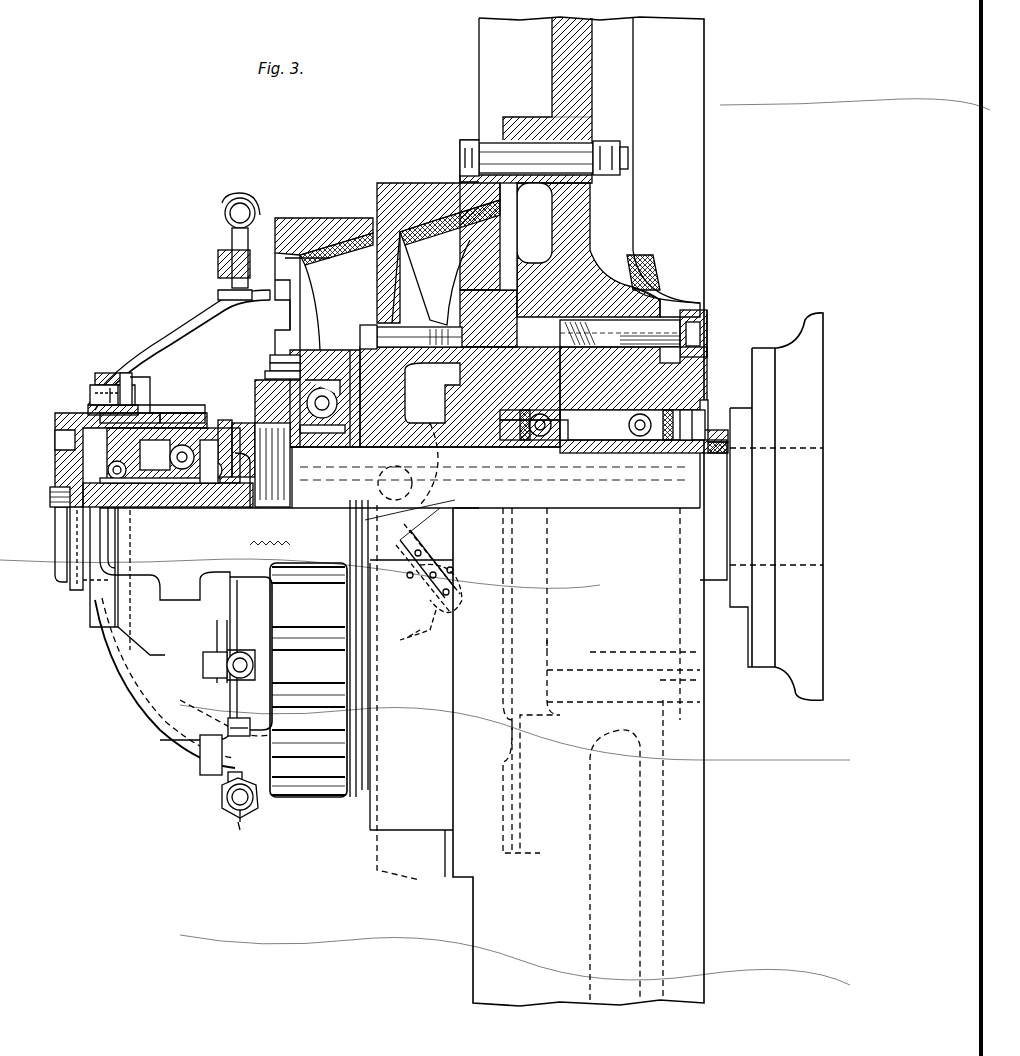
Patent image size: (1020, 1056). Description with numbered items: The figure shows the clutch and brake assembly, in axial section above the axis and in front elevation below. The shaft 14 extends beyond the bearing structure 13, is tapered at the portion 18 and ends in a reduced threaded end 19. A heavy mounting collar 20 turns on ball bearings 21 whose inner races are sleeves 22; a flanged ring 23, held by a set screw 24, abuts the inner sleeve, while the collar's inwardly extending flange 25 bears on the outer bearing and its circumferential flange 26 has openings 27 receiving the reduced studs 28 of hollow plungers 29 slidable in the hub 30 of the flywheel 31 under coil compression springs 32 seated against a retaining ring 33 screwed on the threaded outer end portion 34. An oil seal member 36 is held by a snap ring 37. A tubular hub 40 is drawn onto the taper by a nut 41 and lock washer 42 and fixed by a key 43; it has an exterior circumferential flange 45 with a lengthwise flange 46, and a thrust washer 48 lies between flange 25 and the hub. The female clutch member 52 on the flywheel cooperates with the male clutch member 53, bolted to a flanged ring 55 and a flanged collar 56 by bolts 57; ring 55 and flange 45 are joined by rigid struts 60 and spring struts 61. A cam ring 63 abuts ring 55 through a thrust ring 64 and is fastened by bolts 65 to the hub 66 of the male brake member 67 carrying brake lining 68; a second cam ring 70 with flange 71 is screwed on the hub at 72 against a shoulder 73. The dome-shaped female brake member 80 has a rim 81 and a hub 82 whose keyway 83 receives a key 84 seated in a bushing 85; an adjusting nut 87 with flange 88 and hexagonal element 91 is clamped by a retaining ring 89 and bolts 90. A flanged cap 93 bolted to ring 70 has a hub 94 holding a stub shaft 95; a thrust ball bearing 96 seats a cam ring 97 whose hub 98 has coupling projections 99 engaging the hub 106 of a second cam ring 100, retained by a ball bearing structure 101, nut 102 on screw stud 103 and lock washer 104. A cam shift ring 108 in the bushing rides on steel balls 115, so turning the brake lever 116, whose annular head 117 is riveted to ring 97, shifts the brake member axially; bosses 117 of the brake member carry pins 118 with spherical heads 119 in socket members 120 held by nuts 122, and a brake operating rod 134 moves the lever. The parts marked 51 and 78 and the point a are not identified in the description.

The bearing structure 13 is at (810, 313).
The shaft 14 is at (750, 470).
The tapered portion 18 is at (345, 508).
The reduced threaded end 19 is at (275, 508).
The mounting collar 20 is at (707, 360).
The ball bearings 21 is at (640, 440).
The sleeve 22 is at (665, 440).
The flanged ring 23 is at (728, 432).
The dog-point set screw 24 is at (728, 445).
The inwardly extending flange 25 is at (555, 440).
The circumferential flange 26 is at (707, 345).
The openings 27 is at (700, 330).
The reduced studs 28 is at (705, 315).
The hollow plungers 29 is at (672, 320).
The flywheel hub 30 is at (640, 270).
The flywheel 31 is at (704, 55).
The coil compression spring 32 is at (636, 255).
The retaining ring 33 is at (590, 245).
The threaded outer end portion 34 is at (613, 431).
The oil seal member 36 is at (690, 440).
The snap ring 37 is at (708, 410).
The tubular hub 40 is at (470, 440).
The nut 41 is at (245, 425).
The lock washer 42 is at (225, 420).
The key 43 is at (440, 455).
The exterior circumferential flange 45 is at (460, 327).
The lengthwise flange 46 is at (420, 325).
The thrust washer 48 is at (510, 440).
The friction lining 51 is at (423, 183).
The female clutch member 52 is at (393, 183).
The male clutch member 53 is at (435, 258).
The flanged ring 55 is at (352, 447).
The flanged collar 56 is at (520, 300).
The bolts 57 is at (410, 300).
The rigid struts 60 is at (417, 535).
The spring struts 61 is at (430, 590).
The cam ring 63 is at (340, 350).
The thrust ring 64 is at (330, 447).
The bolts 65 is at (275, 366).
The hub 66 is at (305, 350).
The male brake member 67 is at (292, 305).
The brake lining 68 is at (318, 218).
The second cam ring 70 is at (275, 395).
The inwardly extending flange 71 is at (270, 375).
The threaded connection 72 is at (298, 477).
The shoulder 73 is at (325, 485).
The ring 78 is at (275, 358).
The female brake member 80 is at (208, 290).
The rim 81 is at (292, 218).
The hub 82 is at (180, 413).
The keyway 83 is at (125, 373).
The key 84 is at (165, 413).
The bushing 85 is at (95, 405).
The adjusting nut 87 is at (75, 533).
The flange 88 is at (97, 375).
The flanged retaining ring 89 is at (98, 373).
The bolts 90 is at (120, 385).
The hexagonal element 91 is at (62, 565).
The flanged cap 93 is at (235, 582).
The hub 94 is at (222, 483).
The stub shaft 95 is at (261, 551).
The thrust ball bearing 96 is at (228, 508).
The cam ring 97 is at (200, 500).
The hub 98 is at (180, 483).
The coupling projections 99 is at (190, 508).
The second cam ring 100 is at (80, 420).
The ball bearing structure 101 is at (128, 508).
The nut 102 is at (72, 432).
The screw stud 103 is at (92, 585).
The lock washer 104 is at (120, 560).
The hub 106 is at (180, 570).
The cam shift ring 108 is at (140, 377).
The steel ball 115 is at (212, 405).
The brake lever 116 is at (217, 633).
The boss 117 is at (218, 260).
The pin 118 is at (233, 240).
The spherical head 119 is at (230, 205).
The socket member 120 is at (235, 196).
The nut 122 is at (240, 822).
The brake operating rod 134 is at (230, 685).
The axis a is at (700, 482).